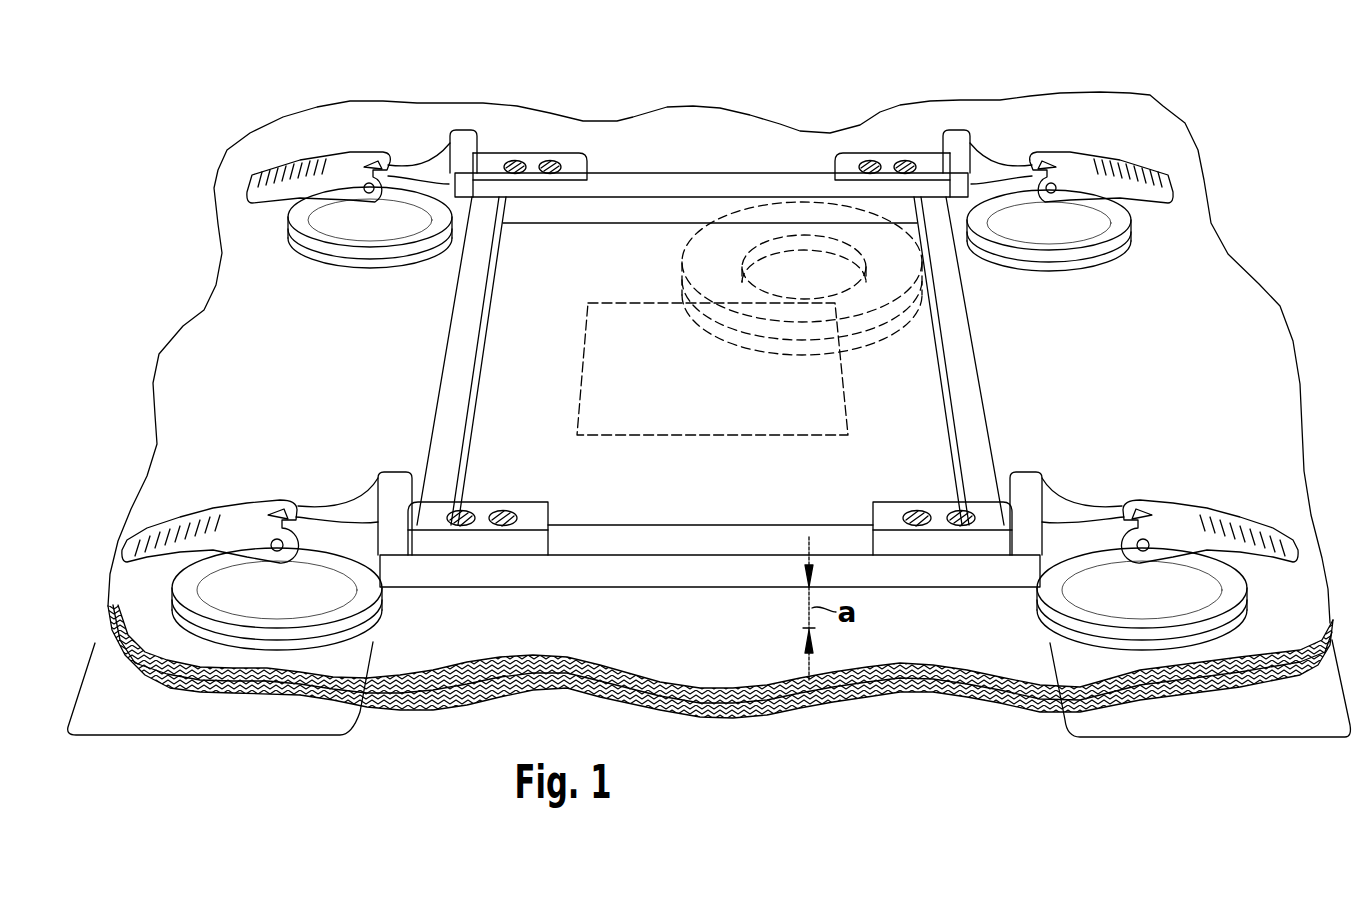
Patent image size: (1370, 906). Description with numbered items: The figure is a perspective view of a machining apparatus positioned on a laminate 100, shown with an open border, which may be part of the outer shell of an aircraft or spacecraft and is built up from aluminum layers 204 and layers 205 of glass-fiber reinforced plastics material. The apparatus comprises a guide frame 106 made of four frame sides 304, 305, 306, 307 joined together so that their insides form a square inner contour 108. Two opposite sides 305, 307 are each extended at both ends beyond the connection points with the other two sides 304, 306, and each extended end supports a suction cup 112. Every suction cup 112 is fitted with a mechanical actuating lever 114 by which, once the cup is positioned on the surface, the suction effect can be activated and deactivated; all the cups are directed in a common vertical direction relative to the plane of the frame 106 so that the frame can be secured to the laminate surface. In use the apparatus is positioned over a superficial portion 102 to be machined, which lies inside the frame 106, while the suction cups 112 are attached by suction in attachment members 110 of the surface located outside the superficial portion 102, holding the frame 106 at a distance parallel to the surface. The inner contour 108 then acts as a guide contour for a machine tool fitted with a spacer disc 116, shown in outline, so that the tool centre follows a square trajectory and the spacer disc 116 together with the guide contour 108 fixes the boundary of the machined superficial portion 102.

The laminate 100 is at (902, 118).
The superficial portion 102 is at (645, 437).
The guide frame 106 is at (705, 351).
The inner contour 108 is at (612, 207).
The attachment members 110 is at (207, 735).
The suction cup 112 is at (358, 228).
The mechanical actuating lever 114 is at (190, 503).
The spacer disc 116 is at (872, 303).
The aluminum layers 204 is at (928, 697).
The layers of glass-fiber reinforced plastics material 205 is at (982, 705).
The frame side 304 is at (457, 387).
The frame side 305 is at (690, 567).
The frame side 306 is at (958, 366).
The frame side 307 is at (649, 186).